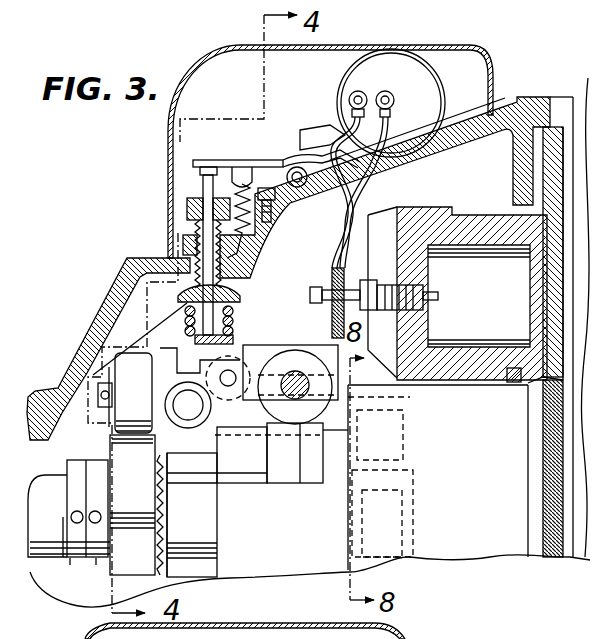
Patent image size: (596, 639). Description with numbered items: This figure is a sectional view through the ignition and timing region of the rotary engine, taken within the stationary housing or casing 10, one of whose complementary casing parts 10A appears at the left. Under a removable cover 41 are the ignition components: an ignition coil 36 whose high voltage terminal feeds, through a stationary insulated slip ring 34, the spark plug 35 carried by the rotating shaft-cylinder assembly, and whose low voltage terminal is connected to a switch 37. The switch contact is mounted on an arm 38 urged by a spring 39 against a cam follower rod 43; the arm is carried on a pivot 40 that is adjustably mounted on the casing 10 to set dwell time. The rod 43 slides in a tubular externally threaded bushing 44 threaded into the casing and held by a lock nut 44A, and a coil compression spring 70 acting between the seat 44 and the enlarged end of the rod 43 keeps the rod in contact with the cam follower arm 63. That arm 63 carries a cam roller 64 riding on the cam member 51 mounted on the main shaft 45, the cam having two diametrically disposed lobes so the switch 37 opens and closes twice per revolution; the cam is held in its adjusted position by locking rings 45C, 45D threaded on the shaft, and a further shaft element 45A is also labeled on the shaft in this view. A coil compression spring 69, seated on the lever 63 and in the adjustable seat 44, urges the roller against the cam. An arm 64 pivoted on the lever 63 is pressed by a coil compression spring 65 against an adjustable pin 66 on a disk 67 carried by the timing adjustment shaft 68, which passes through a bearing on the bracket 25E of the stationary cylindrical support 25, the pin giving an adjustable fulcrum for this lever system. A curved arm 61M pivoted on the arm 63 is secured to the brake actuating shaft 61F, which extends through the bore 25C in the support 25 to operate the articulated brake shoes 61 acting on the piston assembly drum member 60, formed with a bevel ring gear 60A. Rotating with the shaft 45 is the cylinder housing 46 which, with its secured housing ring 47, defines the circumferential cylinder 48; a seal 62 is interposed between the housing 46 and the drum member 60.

The stationary housing or casing 10 is at (557, 97).
The casing part 10A is at (96, 332).
The cylindrical support 25 is at (313, 570).
The bore 25C is at (343, 455).
The bracket 25E is at (268, 480).
The insulated slip ring assembly 34 is at (333, 286).
The spark plug 35 is at (372, 285).
The ignition coil 36 is at (385, 62).
The switch 37 is at (336, 139).
The arm 38 is at (247, 161).
The spring 39 is at (237, 168).
The pivot 40 is at (305, 153).
The cover 41 is at (168, 146).
The cam follower rod 43 is at (202, 189).
The bushing 44 is at (186, 210).
The lock nut 44A is at (182, 238).
The main shaft 45 is at (46, 480).
The lock ring 45A is at (175, 566).
The locking ring 45C is at (80, 566).
The locking ring 45D is at (96, 567).
The cylinder housing 46 is at (440, 207).
The housing ring 47 is at (425, 268).
The cylinder 48 is at (487, 250).
The cam member 51 is at (142, 499).
The ring or drum member 60 is at (502, 548).
The bevel ring gear 60A is at (553, 548).
The brake shoe 61 is at (392, 537).
The brake actuating shaft 61F is at (175, 447).
The curved arm 61M is at (208, 410).
The seal 62 is at (513, 368).
The cam follower arm 63 is at (183, 360).
The cam roller 64 is at (128, 365).
The coil compression spring 65 is at (286, 358).
The adjustable pin 66 is at (294, 430).
The disk 67 is at (310, 458).
The timing adjustment shaft 68 is at (288, 396).
The coil compression spring 69 is at (234, 328).
The coil compression spring 70 is at (228, 302).